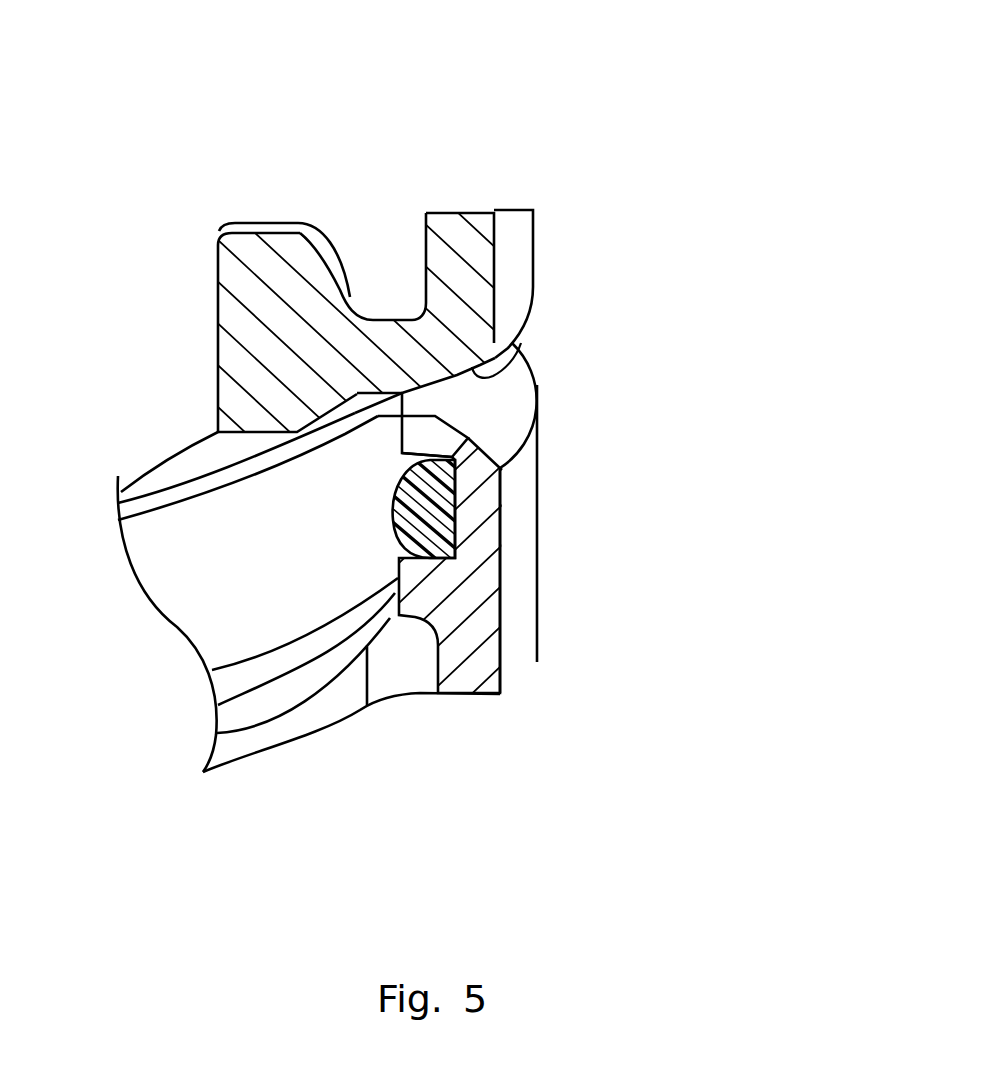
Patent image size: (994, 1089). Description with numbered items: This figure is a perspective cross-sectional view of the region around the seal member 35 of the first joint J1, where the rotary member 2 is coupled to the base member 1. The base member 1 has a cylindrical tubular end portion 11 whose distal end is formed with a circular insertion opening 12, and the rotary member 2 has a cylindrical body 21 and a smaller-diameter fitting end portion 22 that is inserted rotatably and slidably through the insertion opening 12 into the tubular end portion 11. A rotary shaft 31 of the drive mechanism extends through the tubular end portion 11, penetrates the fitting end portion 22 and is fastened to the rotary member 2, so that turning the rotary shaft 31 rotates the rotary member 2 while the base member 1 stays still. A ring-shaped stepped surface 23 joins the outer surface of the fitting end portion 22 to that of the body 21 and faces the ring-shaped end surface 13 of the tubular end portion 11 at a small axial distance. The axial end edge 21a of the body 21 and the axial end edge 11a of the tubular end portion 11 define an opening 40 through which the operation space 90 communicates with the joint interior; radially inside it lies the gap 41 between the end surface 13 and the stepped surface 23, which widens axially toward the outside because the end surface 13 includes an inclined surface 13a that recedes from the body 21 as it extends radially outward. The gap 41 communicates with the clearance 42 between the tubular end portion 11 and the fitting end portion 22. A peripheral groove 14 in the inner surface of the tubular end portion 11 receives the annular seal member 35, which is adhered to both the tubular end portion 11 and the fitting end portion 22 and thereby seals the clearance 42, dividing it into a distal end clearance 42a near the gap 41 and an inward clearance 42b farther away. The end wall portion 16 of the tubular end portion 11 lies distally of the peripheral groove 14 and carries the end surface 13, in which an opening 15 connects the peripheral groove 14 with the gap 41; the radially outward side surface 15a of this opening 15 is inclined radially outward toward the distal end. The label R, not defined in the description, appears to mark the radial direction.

The first joint J1 is at (541, 192).
The base member 1 is at (515, 663).
The rotary member 2 is at (513, 250).
The tubular end portion 11 is at (465, 675).
The axial end edge of the outer peripheral surface of the tubular end portion 11a is at (517, 450).
The insertion opening 12 is at (366, 408).
The end surface 13 is at (431, 392).
The inclined surface 13a is at (513, 415).
The peripheral groove 14 is at (402, 476).
The opening 15 is at (533, 385).
The side surface 15a is at (456, 460).
The end wall portion 16 is at (402, 398).
The body 21 is at (248, 342).
The axial end edge of the outer peripheral surface of the body 21a is at (528, 313).
The fitting end portion 22 is at (190, 585).
The stepped surface 23 is at (503, 352).
The rotary shaft 31 is at (303, 716).
The seal member 35 is at (430, 537).
The opening 40 is at (538, 386).
The gap 41 is at (487, 440).
The clearance 42 is at (395, 622).
The distal end clearance 42a is at (508, 352).
The inward clearance 42b is at (362, 633).
The operation space 90 is at (687, 594).
The radial direction R is at (553, 653).